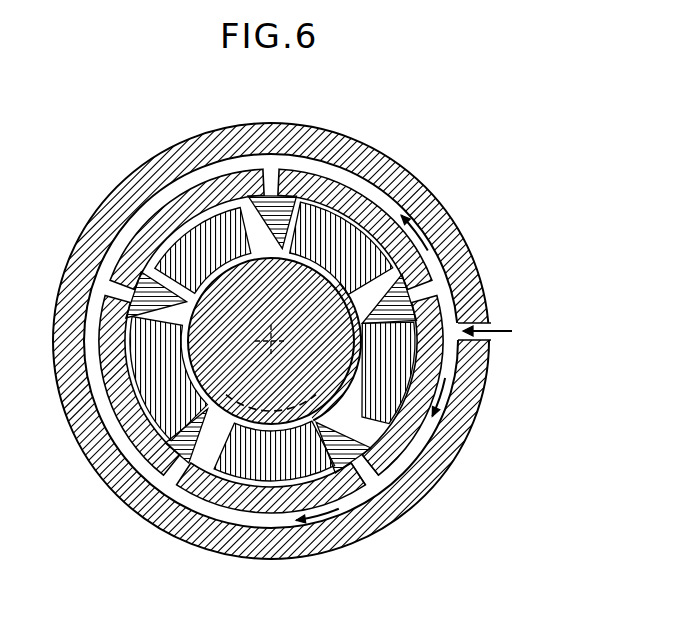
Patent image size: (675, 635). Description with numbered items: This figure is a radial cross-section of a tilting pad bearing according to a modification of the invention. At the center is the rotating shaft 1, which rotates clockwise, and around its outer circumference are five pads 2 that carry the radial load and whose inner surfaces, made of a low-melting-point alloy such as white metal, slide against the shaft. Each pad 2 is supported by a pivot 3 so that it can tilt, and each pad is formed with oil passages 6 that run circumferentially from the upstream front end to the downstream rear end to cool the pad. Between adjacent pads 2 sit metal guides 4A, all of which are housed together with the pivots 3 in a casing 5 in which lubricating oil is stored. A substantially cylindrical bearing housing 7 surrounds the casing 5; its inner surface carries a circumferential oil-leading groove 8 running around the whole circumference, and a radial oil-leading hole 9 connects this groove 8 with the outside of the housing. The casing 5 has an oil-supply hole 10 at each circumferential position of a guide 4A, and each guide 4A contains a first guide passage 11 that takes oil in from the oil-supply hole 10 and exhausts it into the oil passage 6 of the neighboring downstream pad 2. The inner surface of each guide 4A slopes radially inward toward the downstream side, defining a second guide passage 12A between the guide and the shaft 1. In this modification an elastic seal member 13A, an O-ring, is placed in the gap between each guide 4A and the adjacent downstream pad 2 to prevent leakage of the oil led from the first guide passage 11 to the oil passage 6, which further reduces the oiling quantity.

The rotating shaft 1 is at (286, 286).
The pad 2 is at (215, 207).
The pivot 3 is at (337, 317).
The guide 4A is at (127, 277).
The casing 5 is at (373, 203).
The oil passage 6 is at (240, 507).
The bearing housing 7 is at (443, 190).
The circumferential oil-leading groove 8 is at (442, 270).
The radial oil-leading hole 9 is at (488, 352).
The oil-supply hole 10 is at (380, 440).
The first guide passage 11 is at (361, 480).
The second guide passage 12A is at (446, 484).
The elastic seal member 13A is at (322, 422).